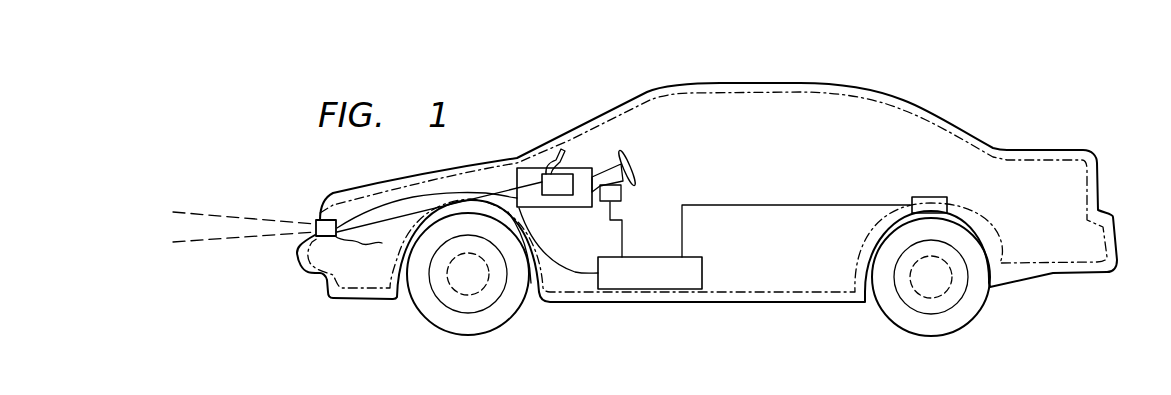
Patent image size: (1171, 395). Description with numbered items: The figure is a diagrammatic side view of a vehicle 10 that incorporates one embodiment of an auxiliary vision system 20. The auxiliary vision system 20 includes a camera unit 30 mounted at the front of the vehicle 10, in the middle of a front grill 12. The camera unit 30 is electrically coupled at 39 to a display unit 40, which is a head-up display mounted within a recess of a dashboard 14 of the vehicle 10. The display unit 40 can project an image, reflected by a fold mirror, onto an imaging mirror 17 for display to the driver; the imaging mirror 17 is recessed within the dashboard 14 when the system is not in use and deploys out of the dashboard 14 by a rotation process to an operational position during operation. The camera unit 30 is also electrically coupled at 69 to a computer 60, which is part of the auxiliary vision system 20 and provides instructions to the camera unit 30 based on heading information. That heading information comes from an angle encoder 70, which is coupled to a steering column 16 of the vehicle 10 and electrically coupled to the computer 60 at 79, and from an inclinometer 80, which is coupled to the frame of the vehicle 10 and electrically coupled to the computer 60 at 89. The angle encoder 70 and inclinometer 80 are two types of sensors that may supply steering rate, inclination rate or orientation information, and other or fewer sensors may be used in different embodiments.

The vehicle 10 is at (1027, 113).
The front grill 12 is at (318, 221).
The dashboard 14 is at (590, 208).
The steering column 16 is at (617, 152).
The imaging mirror 17 is at (566, 158).
The auxiliary vision system 20 is at (757, 93).
The camera unit 30 is at (346, 270).
The electrical coupling between camera unit and display unit 39 is at (494, 193).
The display unit 40 is at (558, 203).
The computer 60 is at (703, 273).
The electrical coupling between camera unit and computer 69 is at (572, 275).
The angle encoder 70 is at (623, 193).
The electrical coupling between angle encoder and computer 79 is at (623, 228).
The inclinometer 80 is at (935, 196).
The electrical coupling between inclinometer and computer 89 is at (785, 205).